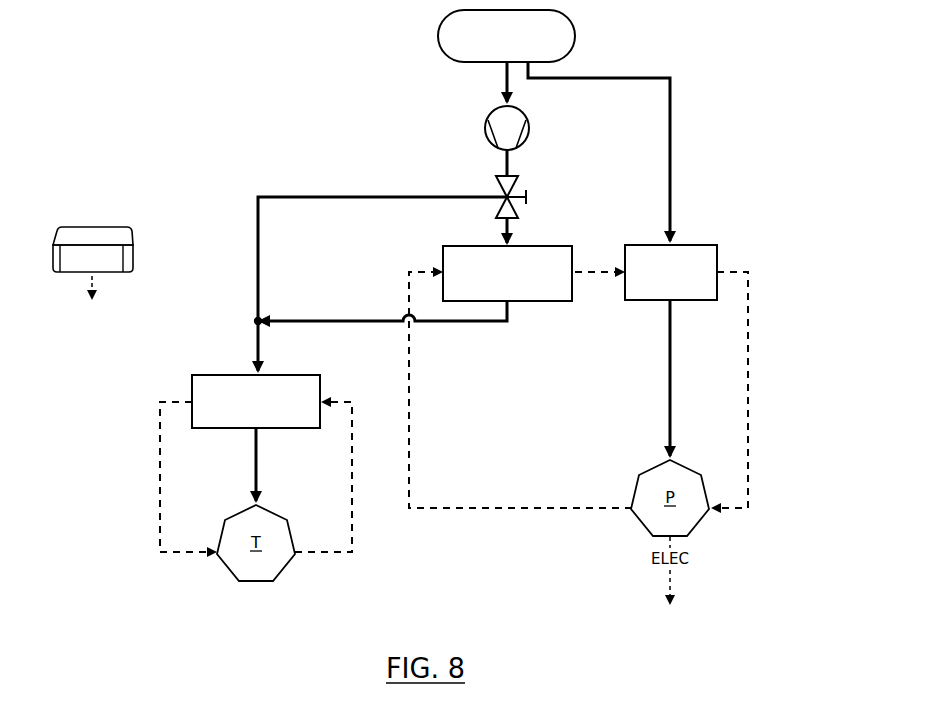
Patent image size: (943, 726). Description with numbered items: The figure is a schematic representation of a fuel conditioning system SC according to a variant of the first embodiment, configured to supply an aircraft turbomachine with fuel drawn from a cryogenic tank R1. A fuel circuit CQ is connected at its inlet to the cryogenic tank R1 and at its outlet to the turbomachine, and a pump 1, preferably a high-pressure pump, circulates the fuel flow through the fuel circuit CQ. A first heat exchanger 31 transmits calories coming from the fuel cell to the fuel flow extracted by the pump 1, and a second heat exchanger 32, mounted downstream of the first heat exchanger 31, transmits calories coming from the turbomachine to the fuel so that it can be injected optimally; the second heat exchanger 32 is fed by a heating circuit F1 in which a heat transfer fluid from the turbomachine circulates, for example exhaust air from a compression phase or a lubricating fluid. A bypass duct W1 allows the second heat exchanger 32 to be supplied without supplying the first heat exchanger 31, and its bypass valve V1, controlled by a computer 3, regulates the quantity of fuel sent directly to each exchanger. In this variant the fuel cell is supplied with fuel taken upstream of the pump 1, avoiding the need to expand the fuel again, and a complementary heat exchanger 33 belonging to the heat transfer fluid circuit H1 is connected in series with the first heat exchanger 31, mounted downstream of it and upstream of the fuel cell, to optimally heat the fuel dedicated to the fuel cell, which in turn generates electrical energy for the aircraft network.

The cryogenic tank R1 is at (578, 36).
The pump 1 is at (530, 130).
The bypass valve V1 is at (520, 185).
The fuel circuit CQ is at (511, 236).
The first heat exchanger 31 is at (497, 282).
The complementary heat exchanger 33 is at (661, 281).
The heat transfer fluid circuit H1 is at (750, 328).
The bypass duct W1 is at (272, 196).
The fuel conditioning system SC is at (307, 118).
The second heat exchanger 32 is at (246, 411).
The heating circuit F1 is at (158, 447).
The computer 3 is at (72, 226).